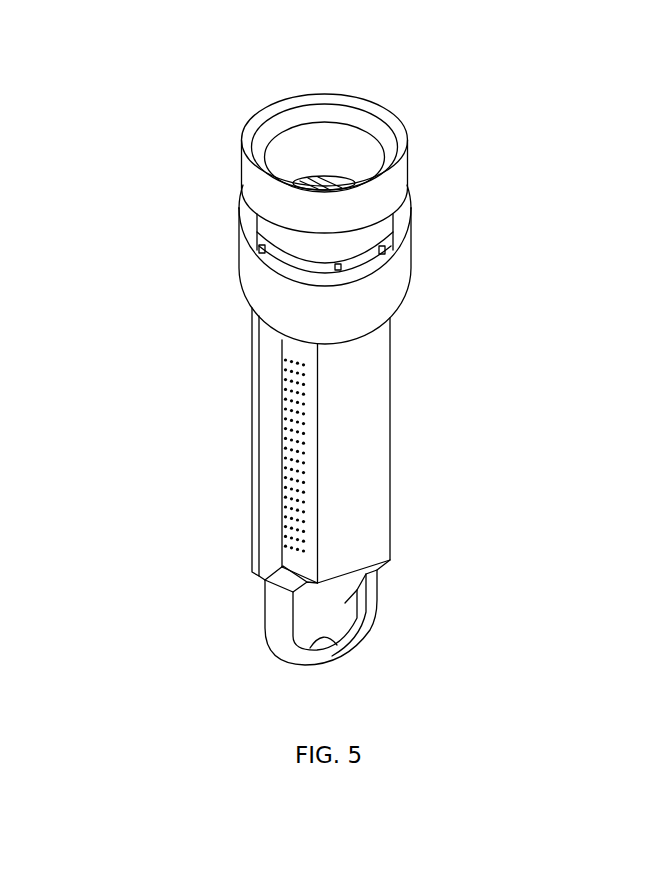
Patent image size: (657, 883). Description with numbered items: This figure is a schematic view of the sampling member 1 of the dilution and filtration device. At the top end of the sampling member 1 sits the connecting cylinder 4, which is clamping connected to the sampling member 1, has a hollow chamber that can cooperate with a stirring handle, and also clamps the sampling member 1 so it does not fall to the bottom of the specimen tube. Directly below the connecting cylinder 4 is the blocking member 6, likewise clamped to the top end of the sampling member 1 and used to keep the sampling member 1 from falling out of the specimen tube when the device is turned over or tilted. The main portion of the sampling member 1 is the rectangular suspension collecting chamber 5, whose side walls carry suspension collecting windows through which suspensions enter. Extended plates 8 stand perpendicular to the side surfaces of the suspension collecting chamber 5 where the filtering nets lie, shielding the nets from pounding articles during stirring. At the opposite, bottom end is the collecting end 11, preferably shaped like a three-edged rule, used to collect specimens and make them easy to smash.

The sampling member 1 is at (362, 462).
The connecting cylinder 4 is at (350, 208).
The suspension collecting chamber 5 is at (253, 425).
The blocking member 6 is at (362, 306).
The extended plate 8 is at (253, 537).
The collecting end 11 is at (373, 603).